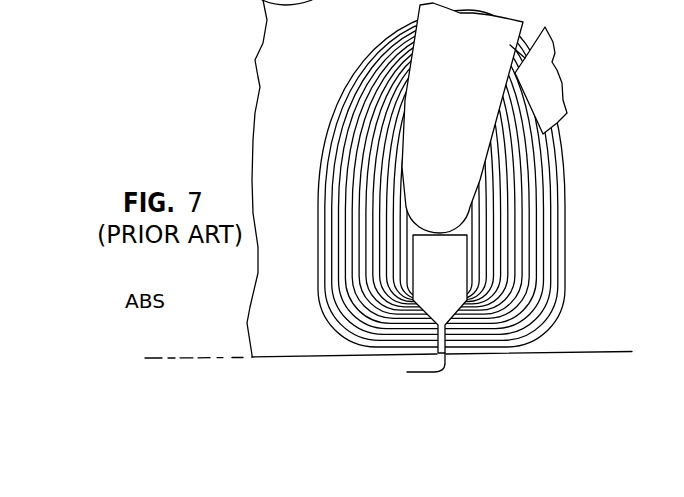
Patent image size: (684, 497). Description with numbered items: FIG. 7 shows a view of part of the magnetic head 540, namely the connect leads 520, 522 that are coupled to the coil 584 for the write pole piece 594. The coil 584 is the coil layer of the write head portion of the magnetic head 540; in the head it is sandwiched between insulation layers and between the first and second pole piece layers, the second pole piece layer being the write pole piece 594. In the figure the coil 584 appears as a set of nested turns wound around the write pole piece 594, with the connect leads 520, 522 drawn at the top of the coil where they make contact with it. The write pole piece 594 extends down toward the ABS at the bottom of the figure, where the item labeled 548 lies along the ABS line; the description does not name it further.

The connect lead 520 is at (428, 118).
The connect lead 522 is at (556, 70).
The magnetic head 540 is at (575, 167).
The coil layer 584 is at (538, 255).
The second pole piece layer 594 is at (457, 288).
The air bearing surface (ABS) plane 548 is at (195, 357).